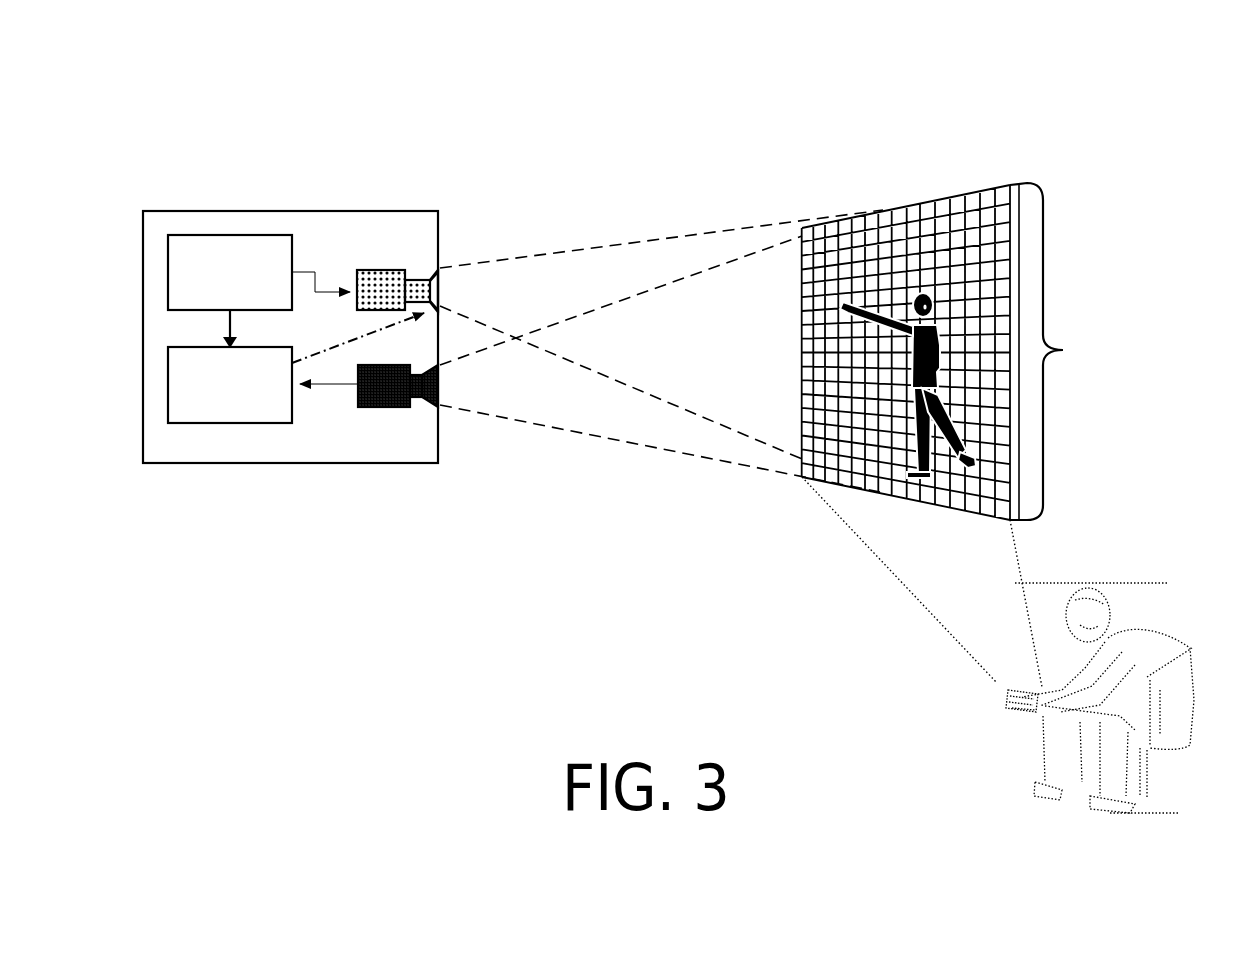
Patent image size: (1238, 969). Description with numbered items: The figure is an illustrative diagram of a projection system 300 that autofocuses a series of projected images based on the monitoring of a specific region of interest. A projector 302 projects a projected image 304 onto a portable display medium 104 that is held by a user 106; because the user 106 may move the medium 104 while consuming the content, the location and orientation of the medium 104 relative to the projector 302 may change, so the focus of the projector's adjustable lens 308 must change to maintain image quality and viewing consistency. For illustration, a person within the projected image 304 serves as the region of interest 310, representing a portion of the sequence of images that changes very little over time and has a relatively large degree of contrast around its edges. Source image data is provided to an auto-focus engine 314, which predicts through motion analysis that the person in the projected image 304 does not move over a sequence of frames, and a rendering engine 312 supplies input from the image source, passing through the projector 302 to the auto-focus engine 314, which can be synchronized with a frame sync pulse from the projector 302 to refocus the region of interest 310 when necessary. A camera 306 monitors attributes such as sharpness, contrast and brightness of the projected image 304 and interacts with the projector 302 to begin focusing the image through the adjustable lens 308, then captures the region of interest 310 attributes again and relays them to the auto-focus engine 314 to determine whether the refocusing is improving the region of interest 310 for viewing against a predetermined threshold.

The projection system 300 is at (240, 463).
The projector 302 is at (380, 290).
The projected image 304 is at (884, 199).
The camera 306 is at (403, 406).
The adjustable lens 308 is at (441, 258).
The region of interest 310 is at (923, 279).
The rendering engine 312 is at (259, 291).
The auto-focus engine 314 is at (296, 368).
The portable display medium 104 is at (905, 756).
The user 106 is at (1110, 573).